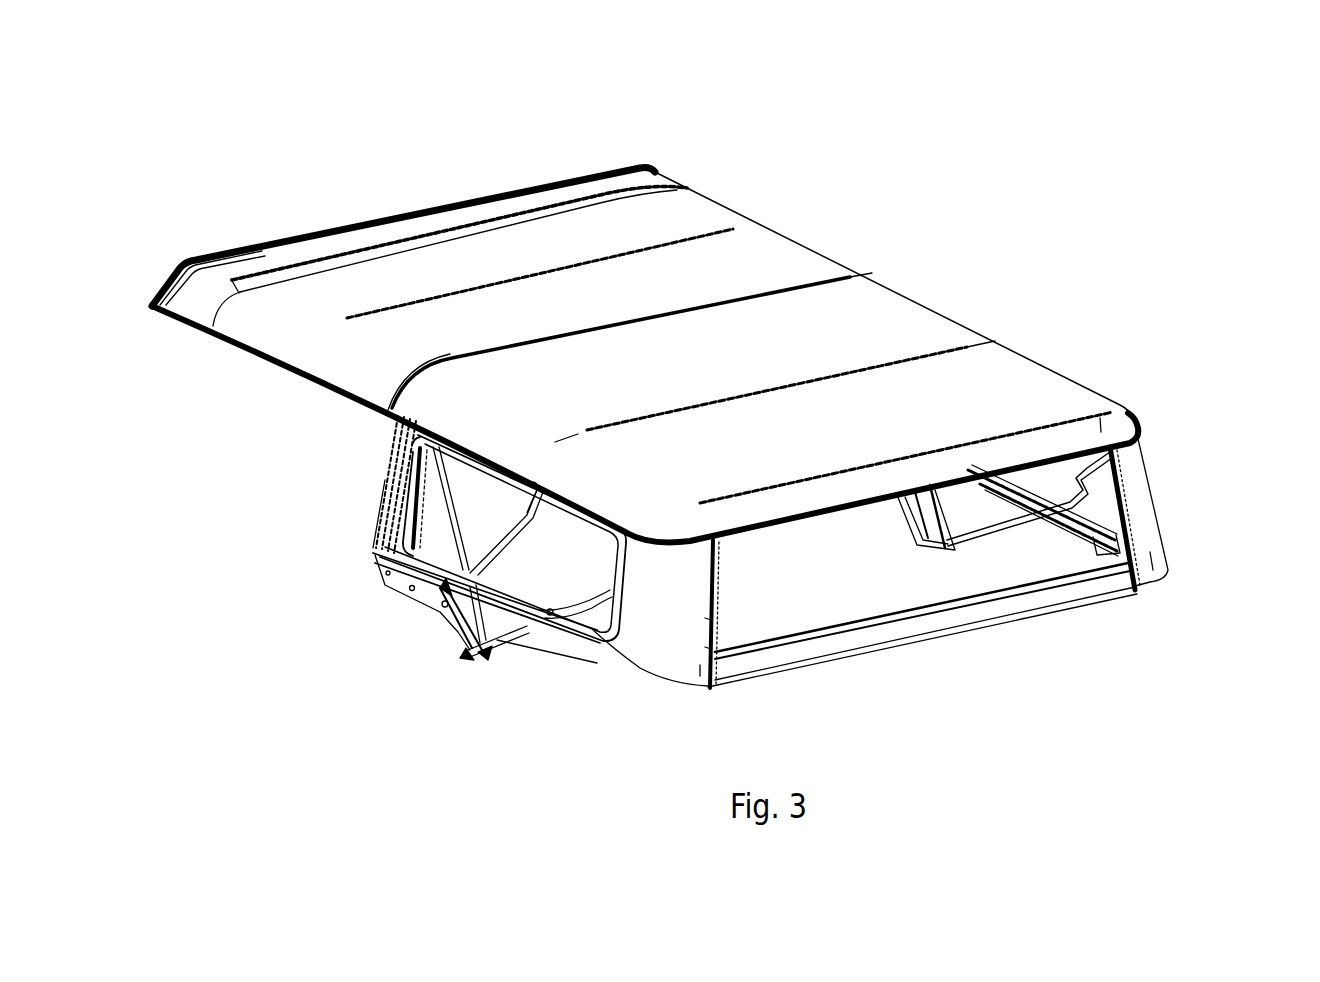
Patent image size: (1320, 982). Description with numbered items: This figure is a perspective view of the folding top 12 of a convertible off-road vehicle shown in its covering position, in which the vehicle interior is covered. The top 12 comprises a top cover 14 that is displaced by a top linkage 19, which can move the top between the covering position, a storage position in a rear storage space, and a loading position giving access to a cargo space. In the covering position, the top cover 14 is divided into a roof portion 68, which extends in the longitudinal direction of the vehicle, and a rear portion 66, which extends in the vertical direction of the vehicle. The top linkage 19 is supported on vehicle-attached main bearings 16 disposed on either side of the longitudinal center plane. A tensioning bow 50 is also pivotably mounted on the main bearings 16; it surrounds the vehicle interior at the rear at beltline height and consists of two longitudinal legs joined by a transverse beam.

The top 12 is at (700, 428).
The top cover 14 is at (703, 265).
The vehicle-attached main bearing 16 is at (407, 592).
The top linkage 19 is at (486, 655).
The tensioning bow 50 is at (967, 610).
The rear portion 66 is at (1140, 504).
The roof portion 68 is at (908, 317).